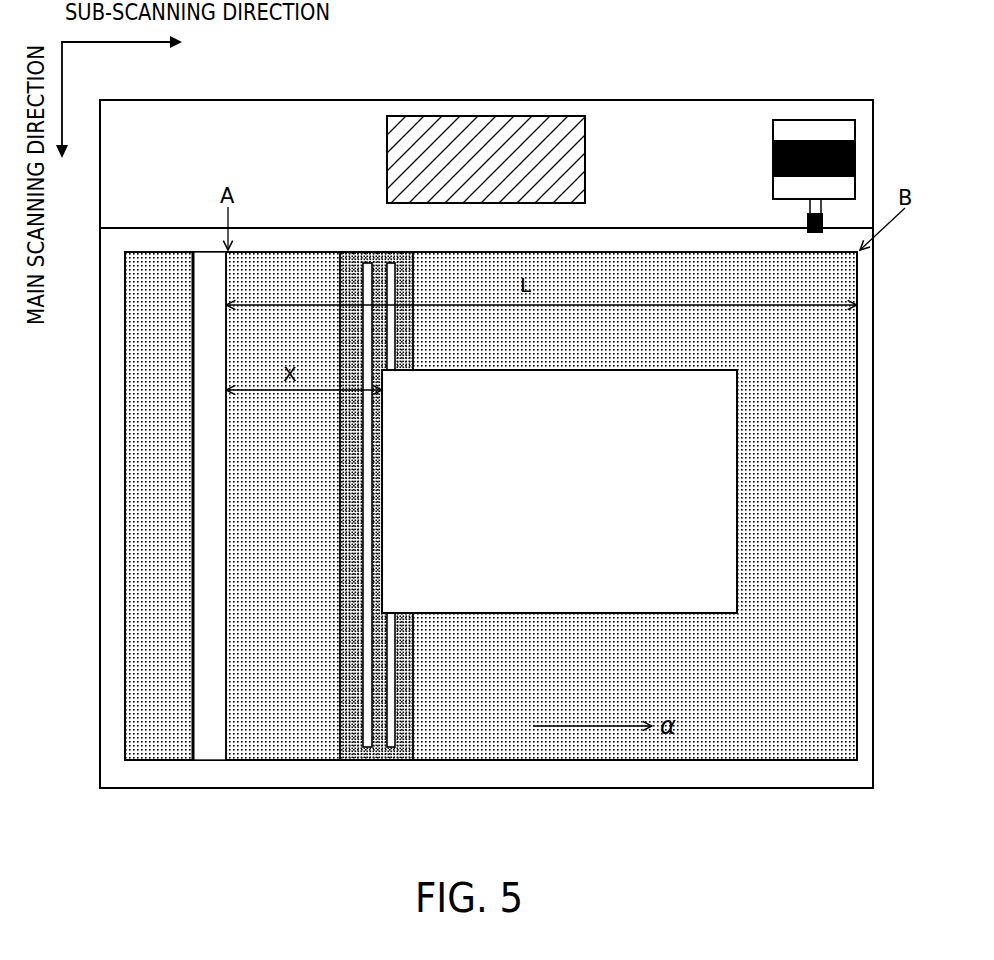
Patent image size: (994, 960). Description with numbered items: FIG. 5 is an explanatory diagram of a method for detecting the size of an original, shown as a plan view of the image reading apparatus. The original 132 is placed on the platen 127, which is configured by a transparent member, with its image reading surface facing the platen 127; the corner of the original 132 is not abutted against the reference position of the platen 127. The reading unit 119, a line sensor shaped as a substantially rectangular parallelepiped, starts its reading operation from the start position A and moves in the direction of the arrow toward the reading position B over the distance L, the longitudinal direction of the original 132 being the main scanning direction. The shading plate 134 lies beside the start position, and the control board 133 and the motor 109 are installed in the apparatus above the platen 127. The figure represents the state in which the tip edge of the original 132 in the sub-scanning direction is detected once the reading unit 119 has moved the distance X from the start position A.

The motor 109 is at (827, 128).
The reading unit 119 is at (360, 750).
The platen 127 is at (720, 750).
The original 132 is at (525, 595).
The control board 133 is at (517, 116).
The shading plate 134 is at (215, 745).